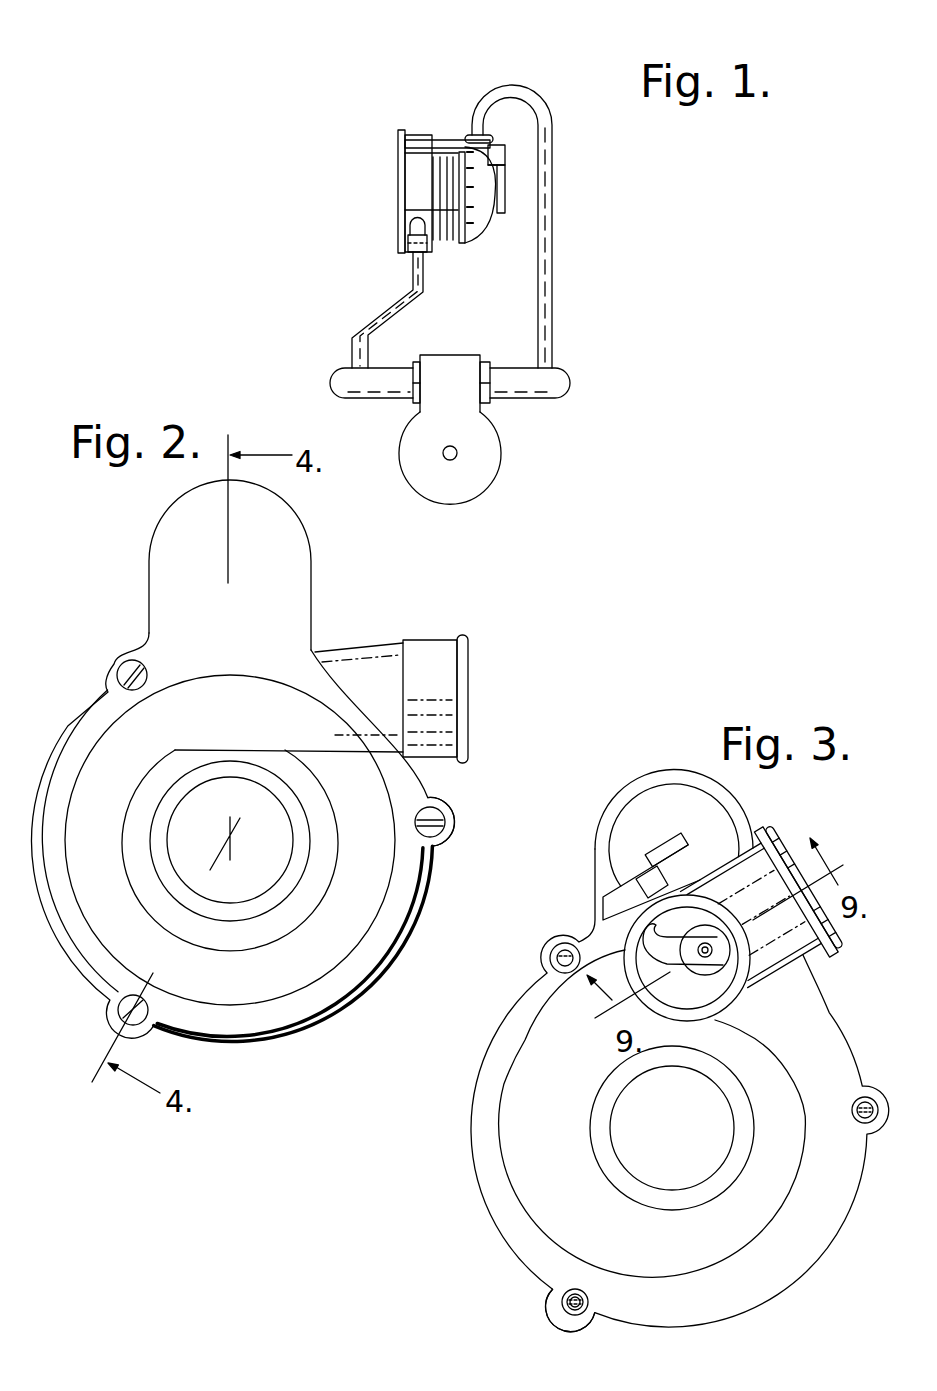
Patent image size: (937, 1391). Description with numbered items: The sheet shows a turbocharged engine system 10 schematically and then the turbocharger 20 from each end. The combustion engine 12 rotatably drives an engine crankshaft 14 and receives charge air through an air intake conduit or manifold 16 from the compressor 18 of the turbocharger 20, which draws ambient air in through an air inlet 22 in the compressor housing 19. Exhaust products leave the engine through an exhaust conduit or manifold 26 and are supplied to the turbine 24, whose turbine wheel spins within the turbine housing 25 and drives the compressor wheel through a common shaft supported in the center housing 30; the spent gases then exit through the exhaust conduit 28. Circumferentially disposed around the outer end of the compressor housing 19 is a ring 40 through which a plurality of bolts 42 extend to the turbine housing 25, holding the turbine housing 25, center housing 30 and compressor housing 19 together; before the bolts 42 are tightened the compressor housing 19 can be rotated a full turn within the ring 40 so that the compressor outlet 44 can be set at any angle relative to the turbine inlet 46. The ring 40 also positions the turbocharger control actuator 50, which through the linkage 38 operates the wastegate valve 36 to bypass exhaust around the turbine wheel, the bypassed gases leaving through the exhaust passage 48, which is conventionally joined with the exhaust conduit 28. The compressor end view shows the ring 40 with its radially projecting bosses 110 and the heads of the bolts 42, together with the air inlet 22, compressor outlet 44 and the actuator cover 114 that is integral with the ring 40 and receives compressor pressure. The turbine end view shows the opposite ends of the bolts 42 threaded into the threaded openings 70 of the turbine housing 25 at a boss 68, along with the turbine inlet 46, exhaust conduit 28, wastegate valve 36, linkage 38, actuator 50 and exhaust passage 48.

In FIG. 1, the turbocharged engine system 10 is at (563, 68).
In FIG. 1, the combustion engine 12 is at (502, 456).
In FIG. 1, the engine crankshaft 14 is at (455, 458).
In FIG. 1, the air intake conduit or manifold 16 is at (332, 392).
In FIG. 1, the compressor 18 is at (412, 118).
In FIG. 1, the compressor housing 19 is at (423, 196).
In FIG. 2, the compressor housing 19 is at (405, 932).
In FIG. 1, the turbocharger 20 is at (464, 257).
In FIG. 2, the air inlet 22 is at (290, 824).
In FIG. 1, the turbine 24 is at (491, 225).
In FIG. 1, the turbine housing 25 is at (512, 184).
In FIG. 3, the turbine housing 25 is at (826, 1015).
In FIG. 1, the exhaust conduit or manifold 26 is at (556, 398).
In FIG. 1, the exhaust conduit 28 is at (505, 203).
In FIG. 3, the exhaust conduit 28 is at (715, 1087).
In FIG. 1, the center housing 30 is at (438, 245).
In FIG. 3, the wastegate valve 36 is at (714, 928).
In FIG. 1, the linkage 38 is at (457, 137).
In FIG. 3, the linkage 38 is at (637, 875).
In FIG. 1, the ring 40 is at (400, 130).
In FIG. 2, the ring 40 is at (303, 632).
In FIG. 2, the bolts 42 is at (120, 668).
In FIG. 3, the bolts 42 is at (868, 1120).
In FIG. 2, the compressor outlet 44 is at (373, 648).
In FIG. 3, the turbine inlet 46 is at (768, 852).
In FIG. 1, the exhaust passage 48 is at (492, 168).
In FIG. 3, the exhaust passage 48 is at (663, 985).
In FIG. 1, the turbocharger control actuator 50 is at (430, 140).
In FIG. 3, the turbocharger control actuator 50 is at (686, 822).
In FIG. 3, the boss 68 is at (558, 1320).
In FIG. 3, the threaded openings 70 is at (562, 1301).
In FIG. 2, the bosses 110 is at (447, 836).
In FIG. 2, the actuator cover 114 is at (280, 549).